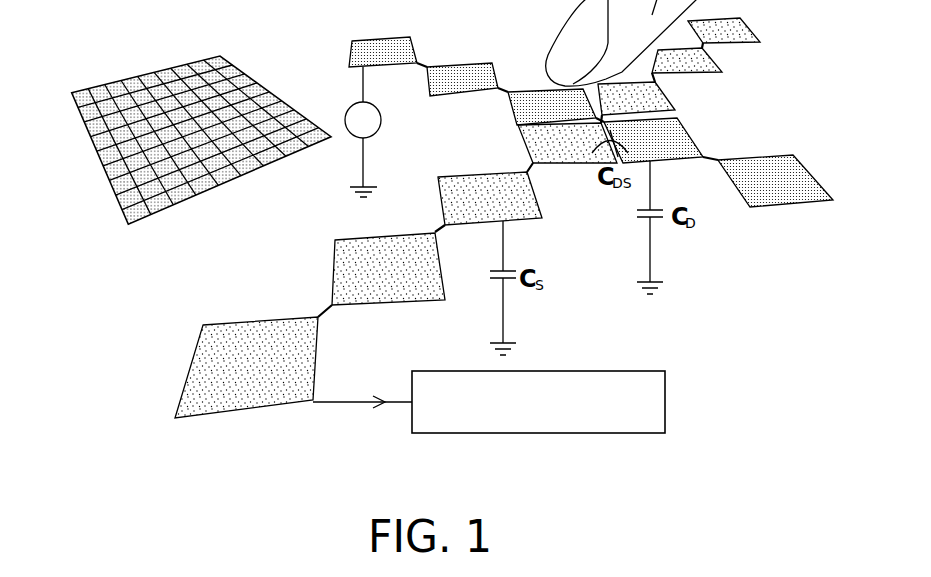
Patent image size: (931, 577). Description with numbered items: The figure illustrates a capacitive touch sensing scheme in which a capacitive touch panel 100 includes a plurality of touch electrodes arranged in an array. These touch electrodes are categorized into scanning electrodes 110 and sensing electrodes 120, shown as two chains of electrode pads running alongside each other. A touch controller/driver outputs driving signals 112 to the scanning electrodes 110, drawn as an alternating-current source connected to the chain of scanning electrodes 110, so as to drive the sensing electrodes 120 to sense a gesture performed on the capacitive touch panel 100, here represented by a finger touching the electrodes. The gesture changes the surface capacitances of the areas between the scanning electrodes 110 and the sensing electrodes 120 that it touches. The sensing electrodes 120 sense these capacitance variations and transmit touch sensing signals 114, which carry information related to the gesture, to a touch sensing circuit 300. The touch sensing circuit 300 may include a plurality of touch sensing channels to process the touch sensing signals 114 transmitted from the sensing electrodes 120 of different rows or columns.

The capacitive touch panel 100 is at (87, 168).
The scanning electrodes 110 is at (784, 172).
The driving signals 112 is at (382, 120).
The touch sensing signals 114 is at (362, 422).
The sensing electrodes 120 is at (232, 395).
The touch sensing circuit 300 is at (665, 405).